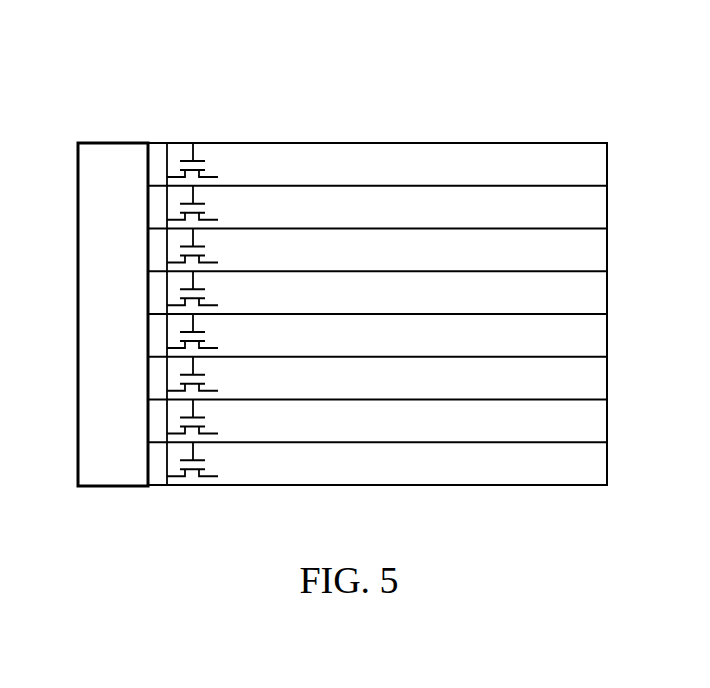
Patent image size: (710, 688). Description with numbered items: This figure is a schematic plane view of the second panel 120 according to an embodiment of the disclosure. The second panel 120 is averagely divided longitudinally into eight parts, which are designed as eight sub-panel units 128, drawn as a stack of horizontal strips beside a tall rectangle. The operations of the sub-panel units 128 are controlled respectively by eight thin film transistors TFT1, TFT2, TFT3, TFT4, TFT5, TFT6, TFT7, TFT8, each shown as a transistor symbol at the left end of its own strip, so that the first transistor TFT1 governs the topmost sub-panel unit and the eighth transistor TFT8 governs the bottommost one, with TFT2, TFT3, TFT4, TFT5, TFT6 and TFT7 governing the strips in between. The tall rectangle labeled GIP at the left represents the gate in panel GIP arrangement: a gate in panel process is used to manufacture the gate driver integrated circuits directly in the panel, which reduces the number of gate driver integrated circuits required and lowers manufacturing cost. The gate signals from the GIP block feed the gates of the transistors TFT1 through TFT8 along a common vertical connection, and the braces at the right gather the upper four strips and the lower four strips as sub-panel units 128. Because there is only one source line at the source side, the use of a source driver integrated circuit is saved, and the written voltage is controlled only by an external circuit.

The second panel 120 is at (113, 97).
The sub-panel units 128 is at (597, 162).
The gate in panel GIP is at (113, 314).
The TFT TFT1 is at (219, 160).
The TFT TFT2 is at (219, 203).
The TFT TFT3 is at (219, 246).
The TFT TFT4 is at (219, 288).
The TFT TFT5 is at (219, 331).
The TFT TFT6 is at (219, 374).
The TFT TFT7 is at (219, 417).
The TFT TFT8 is at (219, 459).